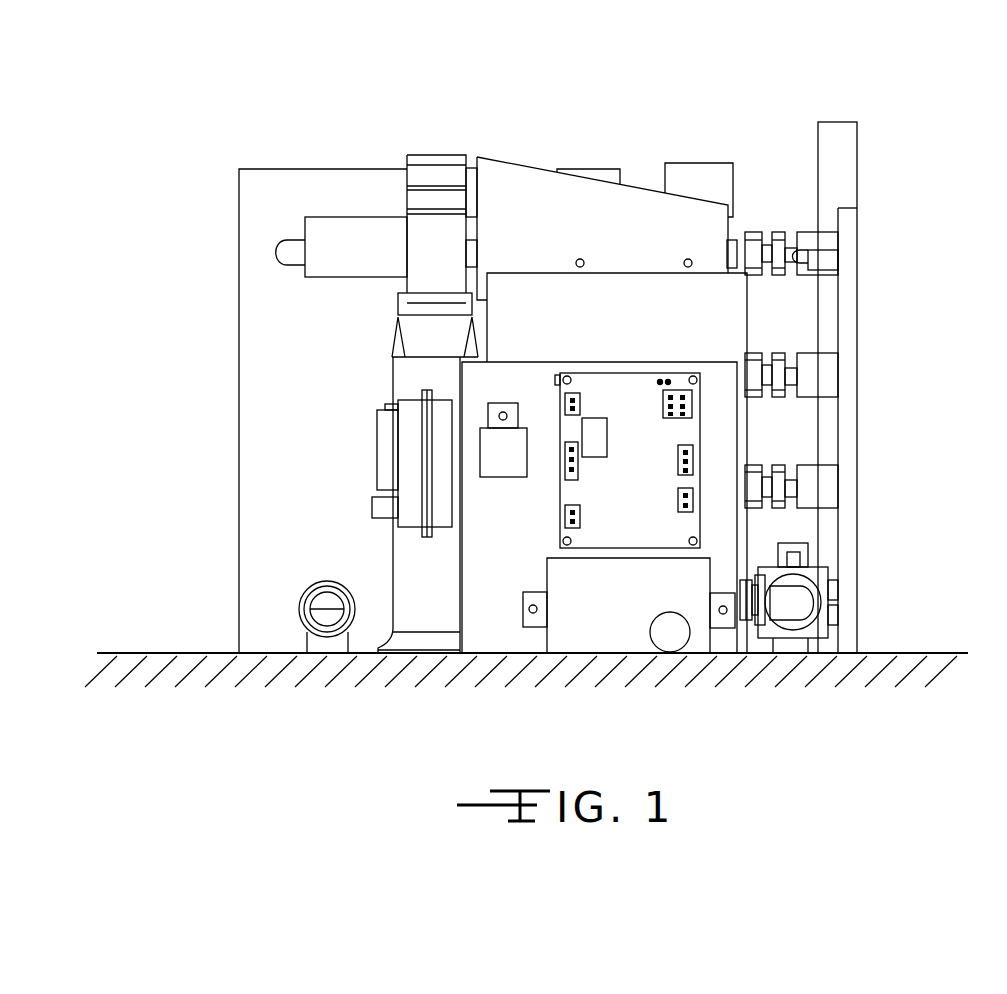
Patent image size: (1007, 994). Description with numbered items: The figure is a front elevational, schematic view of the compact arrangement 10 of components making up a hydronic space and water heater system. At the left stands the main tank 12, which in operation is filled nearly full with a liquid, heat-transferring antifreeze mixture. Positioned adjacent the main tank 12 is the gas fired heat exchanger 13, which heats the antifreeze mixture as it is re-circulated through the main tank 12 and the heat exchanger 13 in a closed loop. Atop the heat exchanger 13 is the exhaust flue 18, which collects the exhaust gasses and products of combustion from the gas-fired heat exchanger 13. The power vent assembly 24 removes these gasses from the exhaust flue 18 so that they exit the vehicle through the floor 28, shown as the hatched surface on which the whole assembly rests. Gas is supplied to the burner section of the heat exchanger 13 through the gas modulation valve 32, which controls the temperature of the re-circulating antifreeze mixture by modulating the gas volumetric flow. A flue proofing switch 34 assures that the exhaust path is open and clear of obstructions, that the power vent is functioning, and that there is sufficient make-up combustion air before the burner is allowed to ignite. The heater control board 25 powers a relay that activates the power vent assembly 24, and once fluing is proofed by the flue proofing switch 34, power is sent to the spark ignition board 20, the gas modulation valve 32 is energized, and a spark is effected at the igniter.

The compact arrangement 10 is at (920, 152).
The main tank 12 is at (358, 404).
The gas fired heat exchanger 13 is at (693, 293).
The exhaust flue 18 is at (657, 332).
The spark ignition board 20 is at (628, 638).
The power vent assembly 24 is at (325, 228).
The heater control board 25 is at (599, 507).
The floor 28 is at (160, 652).
The gas modulation valve 32 is at (810, 656).
The flue proofing switch 34 is at (413, 475).